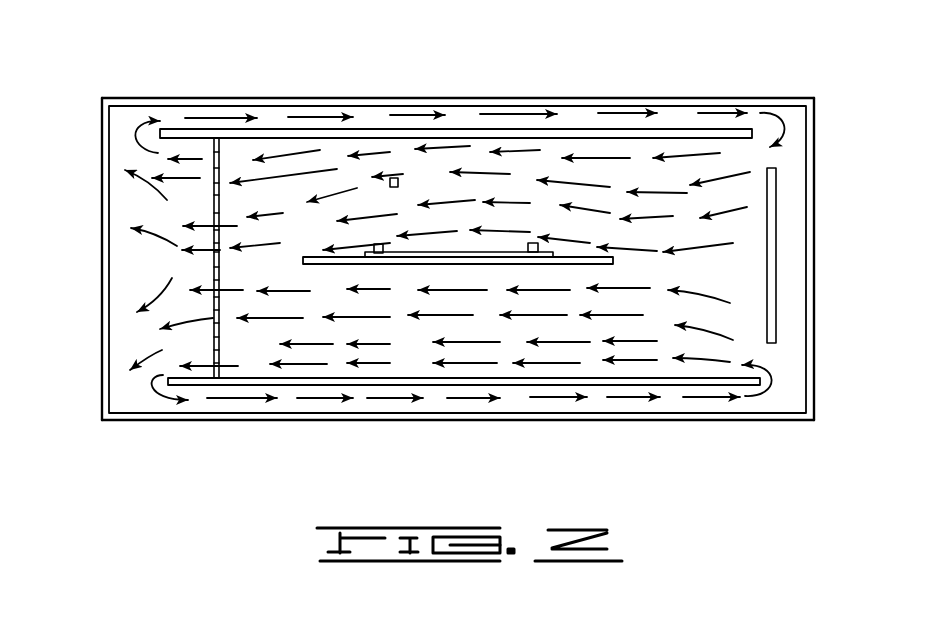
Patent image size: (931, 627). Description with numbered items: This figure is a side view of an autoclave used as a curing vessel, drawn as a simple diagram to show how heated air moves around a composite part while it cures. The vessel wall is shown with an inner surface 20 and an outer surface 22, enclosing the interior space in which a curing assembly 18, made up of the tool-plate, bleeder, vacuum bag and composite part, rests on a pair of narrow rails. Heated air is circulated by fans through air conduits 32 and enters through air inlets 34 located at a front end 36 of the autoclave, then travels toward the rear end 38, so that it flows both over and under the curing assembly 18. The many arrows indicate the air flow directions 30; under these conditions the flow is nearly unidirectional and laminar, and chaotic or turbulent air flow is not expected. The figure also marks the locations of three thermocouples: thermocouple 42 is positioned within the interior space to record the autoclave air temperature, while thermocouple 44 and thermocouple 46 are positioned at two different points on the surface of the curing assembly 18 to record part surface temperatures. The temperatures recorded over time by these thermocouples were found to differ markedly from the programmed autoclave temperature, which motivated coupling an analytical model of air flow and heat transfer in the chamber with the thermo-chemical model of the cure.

The curing assembly 18 is at (497, 250).
The inner surface 20 is at (362, 106).
The outer surface 22 is at (258, 98).
The air flow directions 30 is at (425, 165).
The air conduits 32 is at (278, 130).
The air inlets 34 is at (770, 156).
The front end 36 is at (815, 206).
The rear end 38 is at (101, 185).
The thermocouple 42 is at (393, 178).
The thermocouple 44 is at (380, 254).
The thermocouple 46 is at (538, 252).